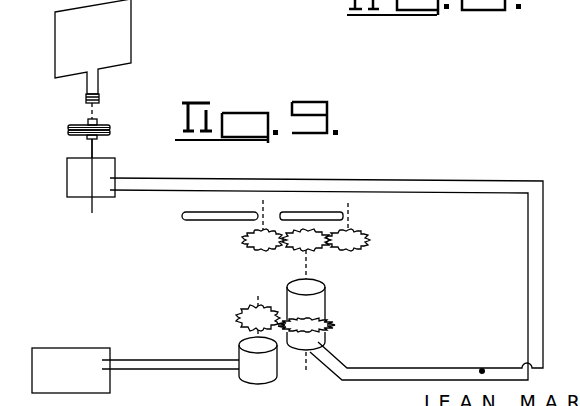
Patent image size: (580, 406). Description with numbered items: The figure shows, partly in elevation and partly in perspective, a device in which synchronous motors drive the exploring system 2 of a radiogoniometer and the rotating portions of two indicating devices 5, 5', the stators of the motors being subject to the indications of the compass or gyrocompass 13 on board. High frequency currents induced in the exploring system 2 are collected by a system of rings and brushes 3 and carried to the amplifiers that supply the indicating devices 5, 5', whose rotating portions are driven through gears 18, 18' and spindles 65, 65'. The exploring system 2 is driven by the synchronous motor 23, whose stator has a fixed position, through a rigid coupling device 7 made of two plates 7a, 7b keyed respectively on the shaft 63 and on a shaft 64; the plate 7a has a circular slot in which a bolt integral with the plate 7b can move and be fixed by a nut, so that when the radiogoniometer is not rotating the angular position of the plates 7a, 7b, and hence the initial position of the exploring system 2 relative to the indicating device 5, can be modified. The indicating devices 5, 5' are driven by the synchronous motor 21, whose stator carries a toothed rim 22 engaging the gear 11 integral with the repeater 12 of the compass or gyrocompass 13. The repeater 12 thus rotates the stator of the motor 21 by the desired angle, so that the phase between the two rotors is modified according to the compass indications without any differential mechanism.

The exploring system 2 is at (131, 20).
The system of rings and brushes 3 is at (101, 88).
The shaft 64 is at (93, 115).
The rigid coupling device 7 is at (85, 127).
The plate 7a is at (68, 126).
The plate 7b is at (68, 134).
The shaft 63 is at (95, 151).
The synchronous motor 23 is at (91, 177).
The indicating device 5 is at (220, 207).
The indicating device 5' is at (313, 207).
The spindle 65 is at (222, 230).
The spindle 65' is at (339, 225).
The gear 18 is at (263, 249).
The gear 18' is at (348, 249).
The synchronous motor 21 is at (318, 303).
The toothed rim 22 is at (331, 318).
The gear 11 is at (257, 309).
The repeater 12 is at (255, 377).
The compass or gyrocompass 13 is at (135, 370).